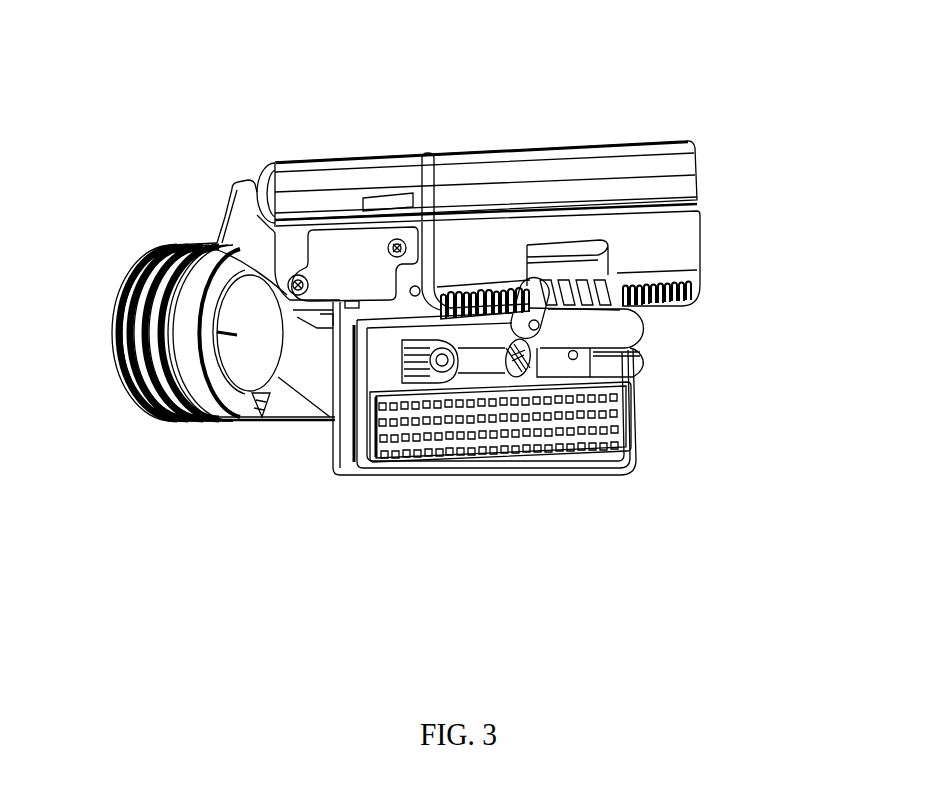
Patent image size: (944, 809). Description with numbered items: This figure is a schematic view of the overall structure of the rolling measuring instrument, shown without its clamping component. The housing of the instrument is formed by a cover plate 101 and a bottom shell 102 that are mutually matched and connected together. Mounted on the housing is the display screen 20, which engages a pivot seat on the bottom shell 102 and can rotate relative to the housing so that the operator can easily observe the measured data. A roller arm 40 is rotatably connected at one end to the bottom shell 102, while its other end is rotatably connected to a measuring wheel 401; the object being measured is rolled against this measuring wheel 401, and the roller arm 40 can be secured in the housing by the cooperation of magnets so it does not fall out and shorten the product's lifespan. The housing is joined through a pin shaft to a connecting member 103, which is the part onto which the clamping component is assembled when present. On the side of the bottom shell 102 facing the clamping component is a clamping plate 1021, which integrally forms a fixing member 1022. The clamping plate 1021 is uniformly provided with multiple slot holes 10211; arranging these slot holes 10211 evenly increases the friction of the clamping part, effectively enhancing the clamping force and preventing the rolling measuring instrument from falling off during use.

The display screen 20 is at (483, 173).
The cover plate 101 is at (255, 232).
The bottom shell 102 is at (678, 242).
The connecting member 103 is at (593, 318).
The fixing member 1022 is at (613, 363).
The clamping plate 1021 is at (535, 423).
The slot holes 10211 is at (537, 427).
The roller arm 40 is at (280, 348).
The measuring wheel 401 is at (147, 407).